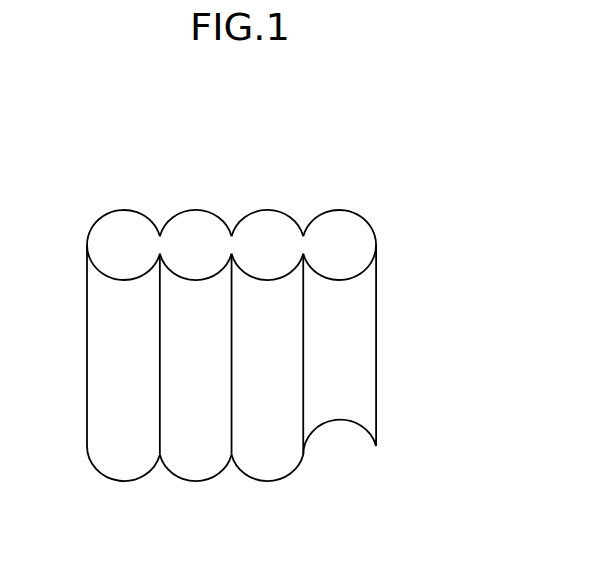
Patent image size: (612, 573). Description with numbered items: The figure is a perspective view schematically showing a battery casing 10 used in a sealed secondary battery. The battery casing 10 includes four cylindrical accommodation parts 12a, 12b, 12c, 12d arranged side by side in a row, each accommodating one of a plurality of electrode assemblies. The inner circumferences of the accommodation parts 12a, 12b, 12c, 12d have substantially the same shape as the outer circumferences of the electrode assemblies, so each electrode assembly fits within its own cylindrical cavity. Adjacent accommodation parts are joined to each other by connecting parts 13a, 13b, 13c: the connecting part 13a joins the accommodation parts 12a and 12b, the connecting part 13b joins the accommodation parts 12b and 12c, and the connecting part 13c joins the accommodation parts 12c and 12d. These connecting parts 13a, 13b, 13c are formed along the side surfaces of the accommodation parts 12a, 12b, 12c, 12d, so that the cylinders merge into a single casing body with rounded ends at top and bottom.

The battery casing 10 is at (433, 183).
The cylindrical accommodation part 12a is at (122, 228).
The cylindrical accommodation part 12b is at (198, 228).
The cylindrical accommodation part 12c is at (270, 225).
The cylindrical accommodation part 12d is at (342, 223).
The connecting part 13a is at (158, 244).
The connecting part 13b is at (230, 244).
The connecting part 13c is at (302, 244).